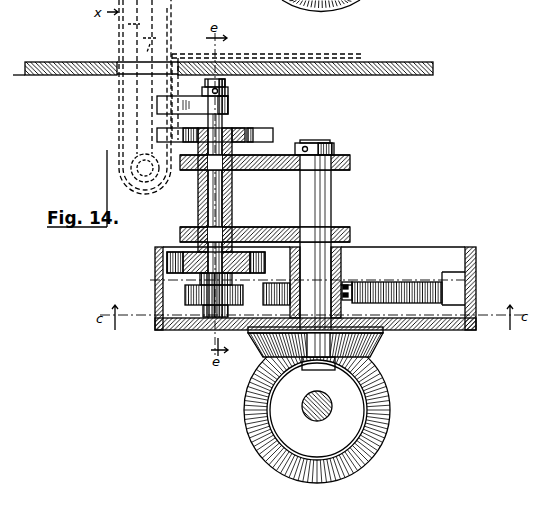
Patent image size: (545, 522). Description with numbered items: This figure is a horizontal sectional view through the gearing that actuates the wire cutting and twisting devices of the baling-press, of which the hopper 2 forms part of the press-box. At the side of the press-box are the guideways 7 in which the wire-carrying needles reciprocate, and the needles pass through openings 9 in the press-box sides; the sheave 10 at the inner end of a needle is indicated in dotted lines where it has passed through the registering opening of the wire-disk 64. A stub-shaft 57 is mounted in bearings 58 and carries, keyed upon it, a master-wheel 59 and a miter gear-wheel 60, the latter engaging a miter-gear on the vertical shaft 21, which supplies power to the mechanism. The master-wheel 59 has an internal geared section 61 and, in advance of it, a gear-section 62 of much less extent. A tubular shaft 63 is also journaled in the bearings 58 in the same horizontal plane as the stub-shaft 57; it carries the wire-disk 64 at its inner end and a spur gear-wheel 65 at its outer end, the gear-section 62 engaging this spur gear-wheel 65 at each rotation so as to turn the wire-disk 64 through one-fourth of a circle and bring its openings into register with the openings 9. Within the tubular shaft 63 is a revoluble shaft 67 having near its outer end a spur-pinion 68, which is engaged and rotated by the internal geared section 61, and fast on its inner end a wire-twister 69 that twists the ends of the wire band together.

The hopper 2 is at (391, 411).
The guideways 7 is at (63, 62).
The openings 9 is at (128, 62).
The wire-carrying revoluble sheave 10 is at (128, 148).
The vertical shaft 21 is at (321, 420).
The stub-shaft 57 is at (332, 203).
The bearings 58 is at (349, 161).
The master-wheel 59 is at (440, 257).
The miter gear-wheel 60 is at (378, 347).
The internal geared section 61 is at (262, 305).
The gear-section 62 is at (170, 282).
The tubular shaft 63 is at (235, 198).
The wire-disk 64 is at (238, 130).
The spur gear-wheel 65 is at (163, 262).
The revoluble shaft 67 is at (212, 203).
The spur-pinion 68 is at (186, 295).
The wire-twister 69 is at (160, 102).